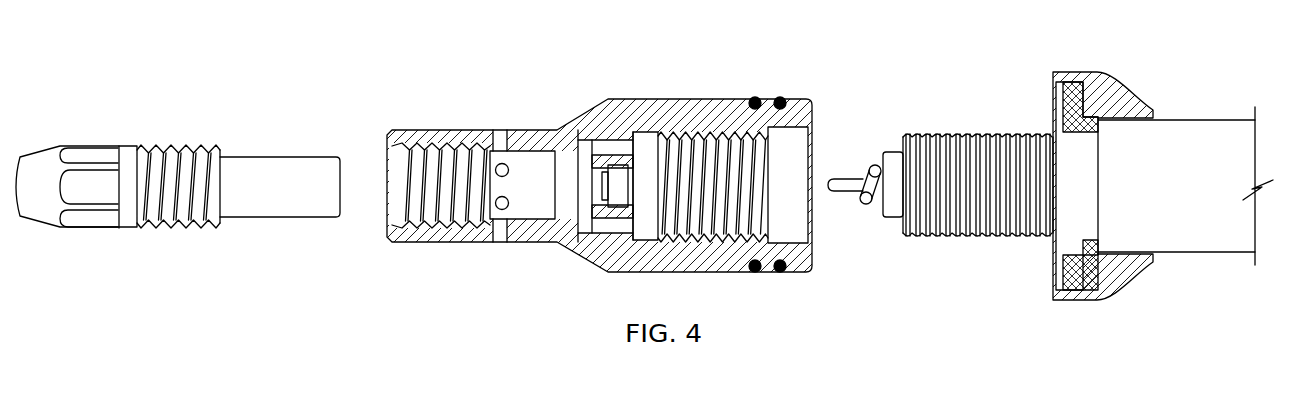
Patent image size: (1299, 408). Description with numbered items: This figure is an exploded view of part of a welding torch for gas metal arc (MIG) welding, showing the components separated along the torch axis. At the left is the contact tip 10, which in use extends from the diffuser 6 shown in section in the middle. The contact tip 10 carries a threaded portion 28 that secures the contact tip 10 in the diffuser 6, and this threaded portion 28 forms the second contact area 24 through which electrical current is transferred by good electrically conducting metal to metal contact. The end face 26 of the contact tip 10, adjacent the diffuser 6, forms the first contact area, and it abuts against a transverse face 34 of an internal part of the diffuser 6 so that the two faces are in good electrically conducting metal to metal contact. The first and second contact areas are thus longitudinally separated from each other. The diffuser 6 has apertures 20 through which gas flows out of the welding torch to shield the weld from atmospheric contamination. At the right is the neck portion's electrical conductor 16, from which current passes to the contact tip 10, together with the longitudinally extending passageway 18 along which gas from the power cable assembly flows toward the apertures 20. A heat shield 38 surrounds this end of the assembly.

The diffuser 6 is at (682, 97).
The contact tip 10 is at (88, 138).
The electrical conductor 16 is at (1077, 221).
The passageway 18 is at (610, 147).
The apertures 20 is at (502, 130).
The second contact area 24 is at (177, 231).
The end face 26 is at (340, 172).
The threaded portion 28 is at (182, 162).
The transverse face 34 is at (593, 165).
The heat shield 38 is at (1110, 80).